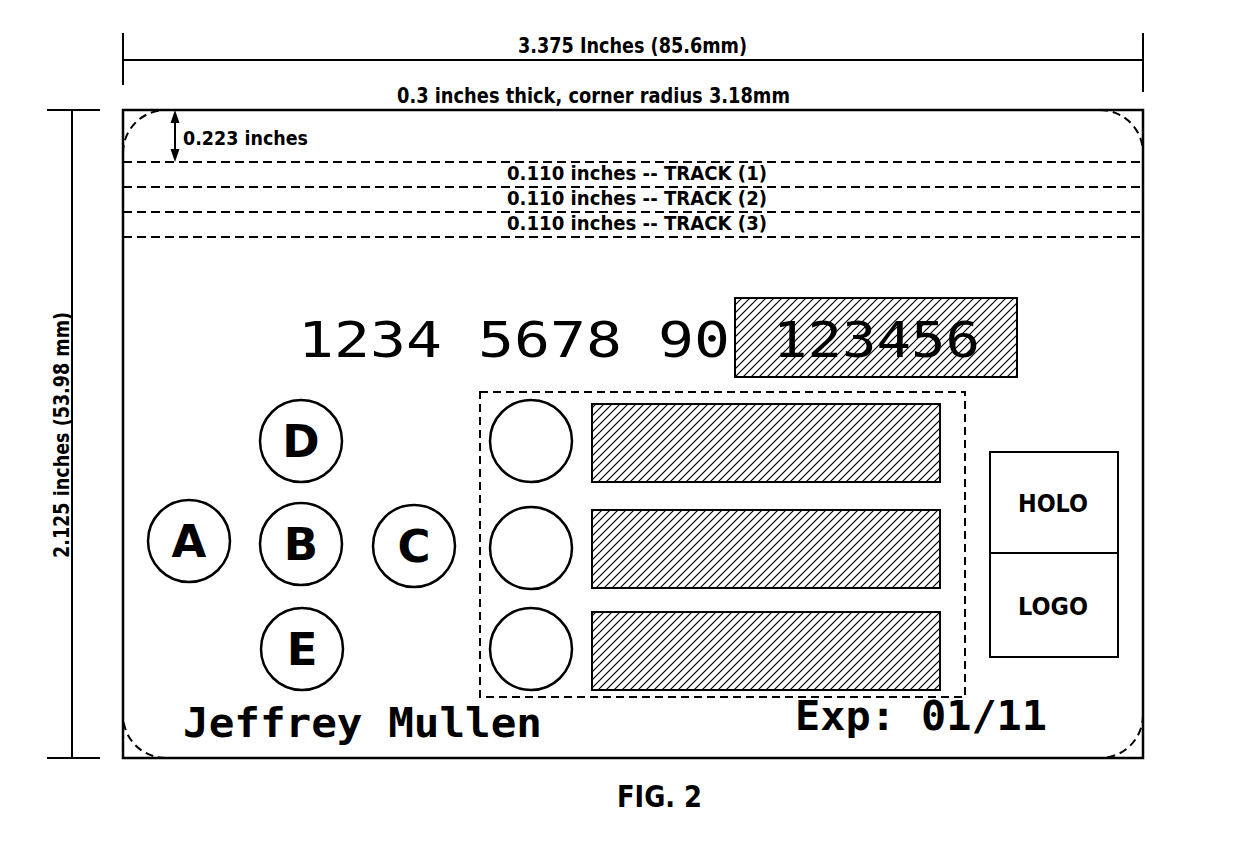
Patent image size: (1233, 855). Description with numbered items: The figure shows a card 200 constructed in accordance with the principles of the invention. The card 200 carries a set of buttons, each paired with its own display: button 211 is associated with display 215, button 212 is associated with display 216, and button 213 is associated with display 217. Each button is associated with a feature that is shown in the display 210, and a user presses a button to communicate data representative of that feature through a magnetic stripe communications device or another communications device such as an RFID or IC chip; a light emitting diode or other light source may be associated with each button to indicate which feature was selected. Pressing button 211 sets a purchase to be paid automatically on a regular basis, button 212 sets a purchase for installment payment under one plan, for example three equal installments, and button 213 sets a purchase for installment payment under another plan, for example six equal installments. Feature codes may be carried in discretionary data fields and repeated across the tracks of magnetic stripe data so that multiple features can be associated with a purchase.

The card 200 is at (1205, 414).
The display 210 is at (655, 392).
The button 211 is at (496, 434).
The button 212 is at (498, 524).
The button 213 is at (498, 625).
The display 215 is at (620, 483).
The display 216 is at (618, 588).
The display 217 is at (612, 690).